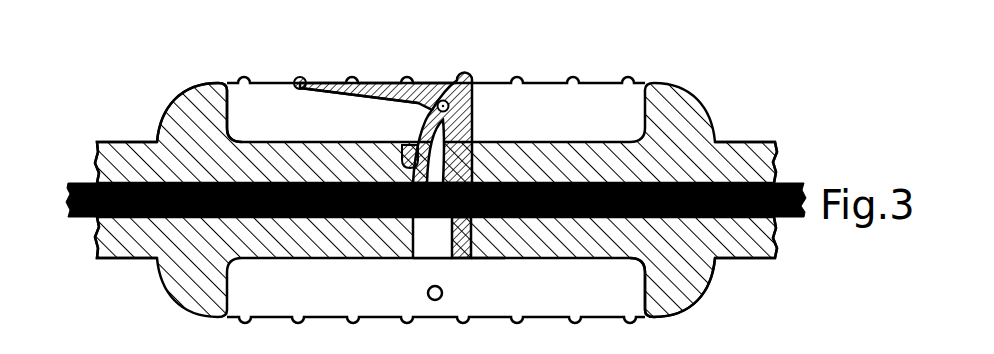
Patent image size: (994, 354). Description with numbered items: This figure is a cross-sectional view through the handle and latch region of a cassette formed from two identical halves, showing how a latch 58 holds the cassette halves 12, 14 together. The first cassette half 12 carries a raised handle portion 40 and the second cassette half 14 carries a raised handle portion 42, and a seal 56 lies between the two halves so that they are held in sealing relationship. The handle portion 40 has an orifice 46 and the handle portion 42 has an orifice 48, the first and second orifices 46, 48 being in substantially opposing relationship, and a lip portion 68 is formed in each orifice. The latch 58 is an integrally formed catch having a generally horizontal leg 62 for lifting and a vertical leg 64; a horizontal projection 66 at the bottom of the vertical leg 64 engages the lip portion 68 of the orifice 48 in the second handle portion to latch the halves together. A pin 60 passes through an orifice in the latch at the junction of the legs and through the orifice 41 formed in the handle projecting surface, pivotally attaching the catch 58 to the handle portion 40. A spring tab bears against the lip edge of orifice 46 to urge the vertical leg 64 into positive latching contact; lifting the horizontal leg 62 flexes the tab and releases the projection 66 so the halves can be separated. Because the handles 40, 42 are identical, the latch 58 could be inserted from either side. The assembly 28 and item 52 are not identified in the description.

The bearing housing assembly 28 is at (714, 60).
The cassette half 12 is at (113, 140).
The cassette half 14 is at (122, 259).
The raised handle portion 40 is at (187, 97).
The raised handle portion 42 is at (683, 304).
The seal 56 is at (793, 219).
The latch 58 is at (481, 113).
The pin 60 is at (443, 99).
The horizontal leg 62 is at (310, 98).
The orifice 46 is at (418, 144).
The lip portion 68 is at (376, 143).
The vertical leg 64 is at (451, 228).
The orifice 48 is at (430, 241).
The lower web portion 52 is at (474, 259).
The projection 66 is at (488, 225).
The orifice 41 is at (435, 300).